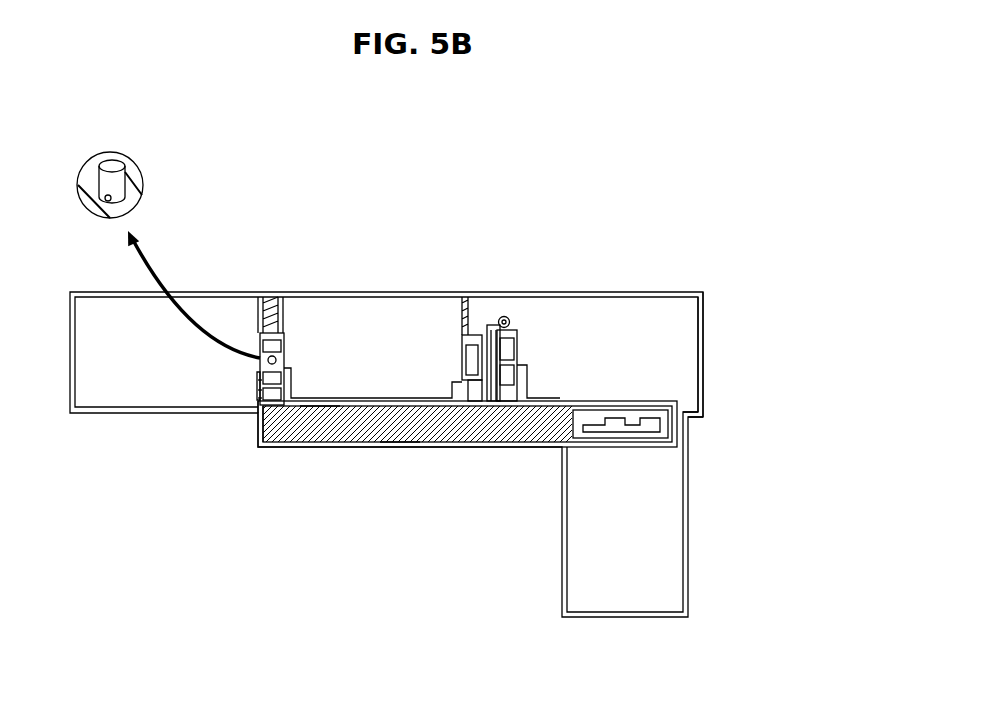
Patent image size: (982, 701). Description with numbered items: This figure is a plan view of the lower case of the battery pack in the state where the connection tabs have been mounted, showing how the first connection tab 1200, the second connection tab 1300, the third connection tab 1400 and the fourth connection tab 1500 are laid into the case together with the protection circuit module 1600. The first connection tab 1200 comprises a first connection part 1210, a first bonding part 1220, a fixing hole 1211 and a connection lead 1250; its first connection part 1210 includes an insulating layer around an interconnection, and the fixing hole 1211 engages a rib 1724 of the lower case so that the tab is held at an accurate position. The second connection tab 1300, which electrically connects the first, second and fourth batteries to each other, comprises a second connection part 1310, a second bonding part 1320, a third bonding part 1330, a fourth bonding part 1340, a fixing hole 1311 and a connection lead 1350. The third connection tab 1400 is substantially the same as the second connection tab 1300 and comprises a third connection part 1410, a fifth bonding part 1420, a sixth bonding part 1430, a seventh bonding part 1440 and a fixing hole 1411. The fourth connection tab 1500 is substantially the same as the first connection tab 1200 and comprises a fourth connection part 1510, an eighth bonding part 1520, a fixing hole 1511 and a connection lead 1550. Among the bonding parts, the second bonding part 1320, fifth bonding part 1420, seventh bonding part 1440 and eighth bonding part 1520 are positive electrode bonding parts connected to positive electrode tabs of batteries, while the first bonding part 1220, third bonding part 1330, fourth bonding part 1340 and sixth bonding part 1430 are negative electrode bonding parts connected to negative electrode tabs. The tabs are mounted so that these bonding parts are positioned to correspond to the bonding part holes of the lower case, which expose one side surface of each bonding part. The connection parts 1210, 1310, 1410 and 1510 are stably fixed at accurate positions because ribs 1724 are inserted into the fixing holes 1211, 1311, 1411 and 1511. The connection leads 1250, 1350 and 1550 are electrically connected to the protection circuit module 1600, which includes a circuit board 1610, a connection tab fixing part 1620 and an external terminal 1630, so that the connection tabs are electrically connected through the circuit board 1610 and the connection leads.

The rib 1724 is at (115, 157).
The second connection part 1310 is at (340, 397).
The fixing hole 1311 is at (258, 350).
The second connection tab 1300 is at (271, 284).
The second bonding part 1320 is at (278, 298).
The third bonding part 1330 is at (455, 385).
The fourth bonding part 1340 is at (466, 286).
The connection lead 1350 is at (397, 398).
The third connection tab 1400 is at (561, 283).
The fixing hole 1411 is at (500, 323).
The third connection part 1410 is at (583, 402).
The fifth bonding part 1420 is at (475, 335).
The sixth bonding part 1430 is at (512, 323).
The seventh bonding part 1440 is at (630, 400).
The first bonding part 1220 is at (260, 382).
The fixing hole 1211 is at (260, 399).
The first connection part 1210 is at (260, 391).
The connection lead 1250 is at (258, 410).
The first connection tab 1200 is at (173, 454).
The connection tab fixing part 1620 is at (280, 447).
The external terminal 1630 is at (318, 441).
The circuit board 1610 is at (402, 447).
The protection circuit module 1600 is at (418, 506).
The fourth connection part 1510 is at (665, 398).
The fixing hole 1511 is at (688, 412).
The connection lead 1550 is at (593, 441).
The eighth bonding part 1520 is at (563, 447).
The fourth connection tab 1500 is at (706, 399).